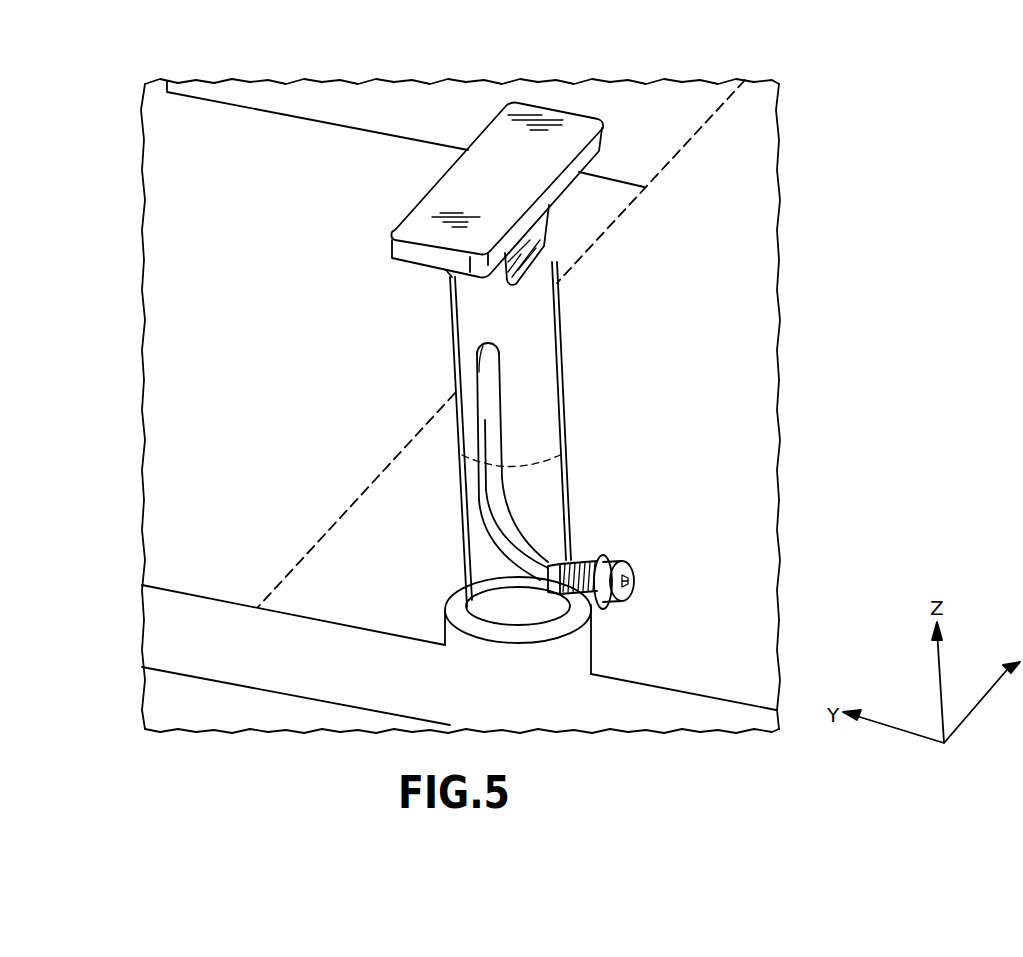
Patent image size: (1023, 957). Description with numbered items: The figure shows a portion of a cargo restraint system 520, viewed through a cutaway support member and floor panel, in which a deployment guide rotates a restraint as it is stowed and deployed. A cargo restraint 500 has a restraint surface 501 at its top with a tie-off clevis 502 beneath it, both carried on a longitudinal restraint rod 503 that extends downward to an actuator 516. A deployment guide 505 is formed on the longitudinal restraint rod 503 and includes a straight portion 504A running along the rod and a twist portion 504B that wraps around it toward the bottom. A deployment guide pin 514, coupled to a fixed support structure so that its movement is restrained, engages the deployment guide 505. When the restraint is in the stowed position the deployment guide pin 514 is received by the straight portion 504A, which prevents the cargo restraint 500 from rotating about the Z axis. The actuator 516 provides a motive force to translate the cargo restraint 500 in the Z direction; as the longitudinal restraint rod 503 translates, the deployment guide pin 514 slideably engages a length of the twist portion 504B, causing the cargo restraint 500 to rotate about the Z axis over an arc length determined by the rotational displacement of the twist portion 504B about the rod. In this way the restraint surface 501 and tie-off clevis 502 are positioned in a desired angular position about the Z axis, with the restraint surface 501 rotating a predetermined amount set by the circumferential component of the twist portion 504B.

The cargo restraint 500 is at (553, 187).
The restraint surface 501 is at (422, 226).
The tie-off clevis 502 is at (447, 274).
The longitudinal restraint rod 503 is at (543, 328).
The straight portion 504A is at (480, 377).
The twist portion 504B is at (505, 544).
The deployment guide 505 is at (488, 392).
The deployment guide pin 514 is at (552, 579).
The actuator 516 is at (577, 648).
The cargo restraint system 520 is at (385, 79).